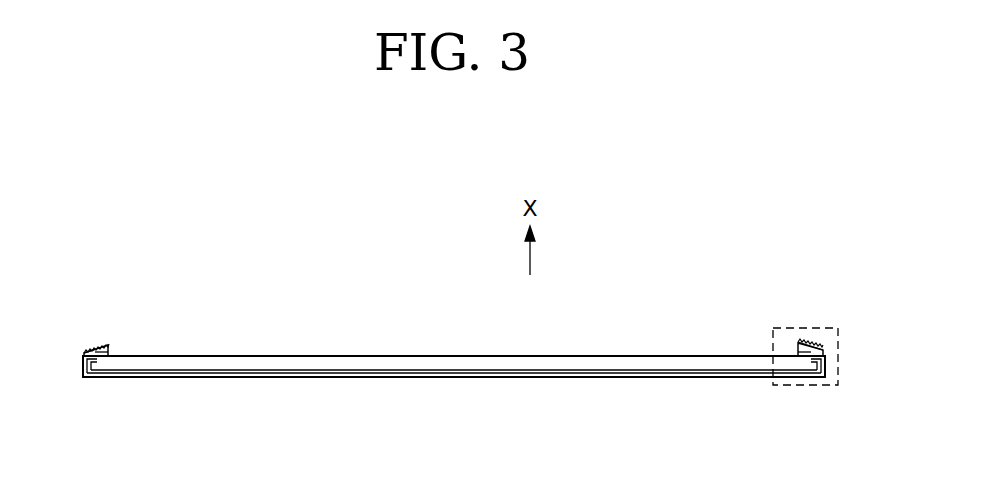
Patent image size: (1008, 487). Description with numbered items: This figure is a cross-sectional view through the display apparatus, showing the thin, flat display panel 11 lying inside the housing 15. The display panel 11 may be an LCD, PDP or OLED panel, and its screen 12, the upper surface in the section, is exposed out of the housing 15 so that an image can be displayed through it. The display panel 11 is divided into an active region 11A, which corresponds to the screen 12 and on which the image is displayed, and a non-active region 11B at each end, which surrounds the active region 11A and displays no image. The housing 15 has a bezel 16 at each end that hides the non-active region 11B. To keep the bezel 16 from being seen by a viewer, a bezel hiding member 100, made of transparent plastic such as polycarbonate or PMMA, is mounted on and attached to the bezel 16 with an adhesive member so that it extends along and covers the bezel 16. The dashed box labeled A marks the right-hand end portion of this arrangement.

The display panel 11 is at (191, 343).
The active region 11A is at (505, 357).
The non-active region 11B is at (97, 368).
The screen 12 is at (277, 356).
The housing 15 is at (576, 394).
The bezel 16 is at (95, 345).
The bezel hiding member 100 is at (108, 343).
The detail region A is at (796, 388).